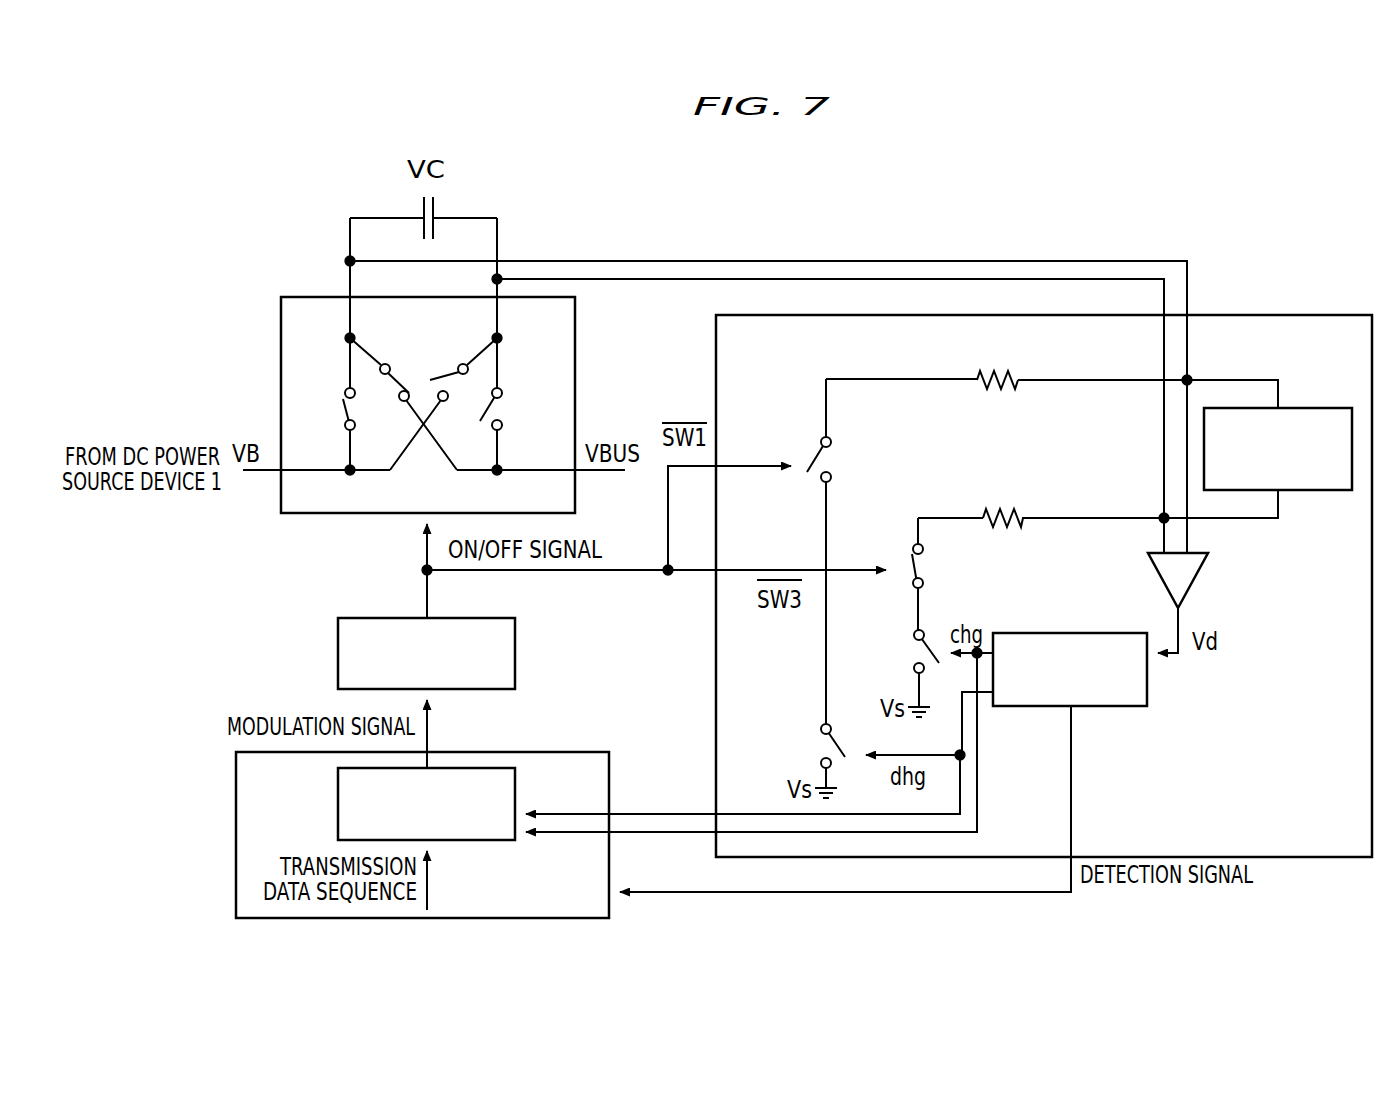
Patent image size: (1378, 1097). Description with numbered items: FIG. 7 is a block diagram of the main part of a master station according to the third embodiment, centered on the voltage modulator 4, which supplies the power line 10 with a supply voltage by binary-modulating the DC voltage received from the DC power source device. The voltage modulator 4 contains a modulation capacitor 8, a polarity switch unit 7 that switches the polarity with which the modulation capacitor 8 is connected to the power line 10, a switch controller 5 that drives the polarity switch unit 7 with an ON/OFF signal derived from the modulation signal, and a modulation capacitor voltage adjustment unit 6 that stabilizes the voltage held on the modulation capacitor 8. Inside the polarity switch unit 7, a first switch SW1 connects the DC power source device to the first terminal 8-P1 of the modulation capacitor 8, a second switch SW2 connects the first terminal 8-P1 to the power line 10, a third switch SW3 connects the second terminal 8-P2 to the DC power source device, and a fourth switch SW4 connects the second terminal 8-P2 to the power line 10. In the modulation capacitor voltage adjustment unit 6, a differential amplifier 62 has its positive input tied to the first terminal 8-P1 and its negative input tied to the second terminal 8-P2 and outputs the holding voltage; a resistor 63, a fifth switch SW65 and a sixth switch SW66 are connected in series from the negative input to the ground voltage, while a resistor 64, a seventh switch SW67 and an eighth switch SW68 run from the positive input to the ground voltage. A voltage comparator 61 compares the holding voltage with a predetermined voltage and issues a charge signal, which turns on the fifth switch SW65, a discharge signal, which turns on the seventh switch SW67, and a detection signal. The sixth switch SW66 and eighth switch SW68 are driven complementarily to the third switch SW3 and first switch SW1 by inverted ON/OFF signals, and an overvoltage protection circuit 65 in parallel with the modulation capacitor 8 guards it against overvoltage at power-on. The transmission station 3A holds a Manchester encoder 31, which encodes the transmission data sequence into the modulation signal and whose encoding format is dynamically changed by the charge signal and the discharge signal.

The transmission station 3A is at (610, 768).
The Manchester encoder 31 is at (338, 800).
The voltage modulator 4 is at (1272, 232).
The switch controller 5 is at (517, 645).
The modulation capacitor voltage adjustment unit 6 is at (1351, 313).
The polarity switch unit 7 is at (577, 312).
The modulation capacitor 8 is at (424, 240).
The first terminal of the modulation capacitor 8-P1 is at (377, 217).
The second terminal of the modulation capacitor 8-P2 is at (477, 217).
The power line 10 is at (625, 470).
The voltage comparator 61 is at (1067, 632).
The differential amplifier 62 is at (1200, 585).
The resistor 63 is at (1013, 508).
The resistor 64 is at (988, 392).
The overvoltage protection circuit 65 is at (1323, 407).
The first switch SW1 is at (343, 407).
The second switch SW2 is at (403, 372).
The third switch SW3 is at (447, 363).
The fourth switch SW4 is at (537, 407).
The fifth switch SW65 is at (912, 653).
The sixth switch SW66 is at (928, 567).
The seventh switch SW67 is at (822, 746).
The eighth switch SW68 is at (833, 458).